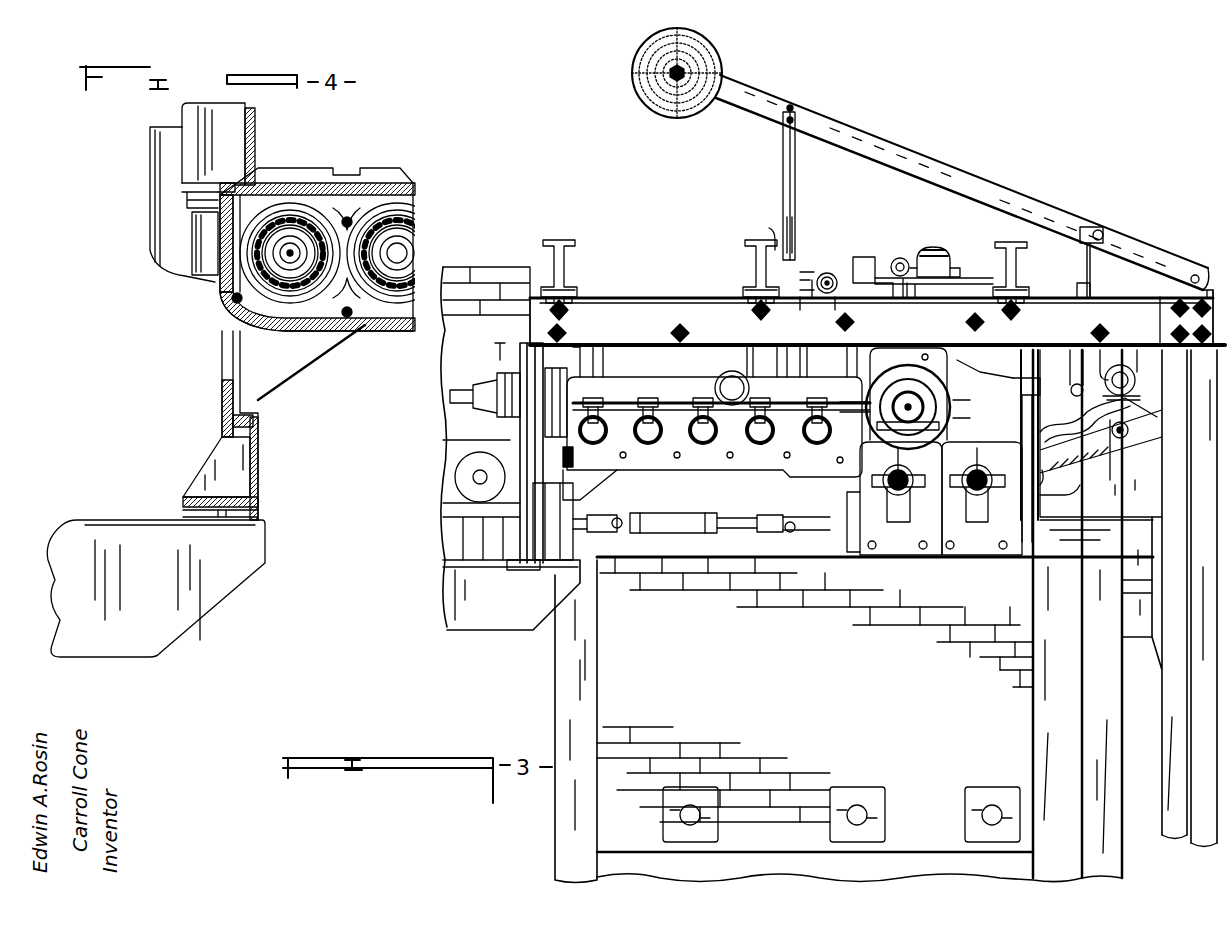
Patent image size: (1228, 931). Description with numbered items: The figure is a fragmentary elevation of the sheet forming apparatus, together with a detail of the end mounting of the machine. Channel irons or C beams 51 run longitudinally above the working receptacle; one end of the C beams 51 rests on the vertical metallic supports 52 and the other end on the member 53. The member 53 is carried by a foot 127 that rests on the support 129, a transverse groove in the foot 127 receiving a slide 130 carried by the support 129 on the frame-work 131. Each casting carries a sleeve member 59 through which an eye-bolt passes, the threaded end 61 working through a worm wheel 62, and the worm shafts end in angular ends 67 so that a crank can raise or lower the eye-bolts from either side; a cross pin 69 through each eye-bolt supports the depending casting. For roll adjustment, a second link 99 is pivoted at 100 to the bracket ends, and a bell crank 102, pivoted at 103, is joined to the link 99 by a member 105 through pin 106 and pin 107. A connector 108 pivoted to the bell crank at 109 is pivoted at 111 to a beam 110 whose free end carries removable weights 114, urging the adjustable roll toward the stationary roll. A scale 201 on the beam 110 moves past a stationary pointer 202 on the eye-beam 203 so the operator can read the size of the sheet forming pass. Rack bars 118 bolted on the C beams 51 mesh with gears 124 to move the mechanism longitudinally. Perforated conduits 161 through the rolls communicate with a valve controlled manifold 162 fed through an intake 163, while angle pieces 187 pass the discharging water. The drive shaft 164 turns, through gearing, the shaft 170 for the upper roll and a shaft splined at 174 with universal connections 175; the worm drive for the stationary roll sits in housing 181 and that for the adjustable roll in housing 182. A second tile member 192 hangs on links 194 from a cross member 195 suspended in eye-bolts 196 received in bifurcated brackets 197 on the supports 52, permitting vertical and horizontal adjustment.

In FIG. 3, the C beams 51 is at (672, 312).
In FIG. 3, the vertical metallic supports 52 is at (1210, 683).
In FIG. 4, the member 53 is at (218, 132).
In FIG. 3, the member 53 is at (573, 343).
In FIG. 3, the sleeve member 59 is at (947, 276).
In FIG. 3, the threaded end 61 is at (931, 248).
In FIG. 3, the worm wheel 62 is at (930, 273).
In FIG. 3, the angular ends 67 is at (902, 257).
In FIG. 3, the cross pin 69 is at (923, 357).
In FIG. 3, the second link 99 is at (1040, 487).
In FIG. 3, the pivot 100 is at (1030, 527).
In FIG. 3, the bell crank 102 is at (1047, 363).
In FIG. 3, the pivot 103 is at (1010, 357).
In FIG. 3, the member 105 is at (970, 400).
In FIG. 3, the pin 106 is at (990, 372).
In FIG. 3, the pin 107 is at (970, 418).
In FIG. 3, the connector 108 is at (1073, 283).
In FIG. 3, the pivot 109 is at (1036, 400).
In FIG. 3, the beam 110 is at (880, 145).
In FIG. 3, the pivot 111 is at (1097, 240).
In FIG. 3, the removable weights 114 is at (660, 78).
In FIG. 3, the rack bars 118 is at (818, 312).
In FIG. 3, the gears 124 is at (823, 267).
In FIG. 4, the foot 127 is at (253, 355).
In FIG. 4, the support 129 is at (240, 472).
In FIG. 4, the slide 130 is at (257, 422).
In FIG. 4, the frame-work 131 is at (200, 597).
In FIG. 3, the frame-work 131 is at (480, 613).
In FIG. 4, the perforated conduits 161 is at (215, 278).
In FIG. 3, the manifold 162 is at (645, 362).
In FIG. 3, the intake 163 is at (717, 377).
In FIG. 3, the drive shaft 164 is at (503, 356).
In FIG. 3, the shaft 170 is at (463, 420).
In FIG. 3, the splined portion 174 is at (687, 530).
In FIG. 3, the universal connections 175 is at (617, 517).
In FIG. 3, the housing 181 is at (913, 545).
In FIG. 3, the housing 182 is at (980, 547).
In FIG. 3, the angle pieces 187 is at (915, 510).
In FIG. 3, the second tile member 192 is at (1093, 455).
In FIG. 3, the links 194 is at (1110, 445).
In FIG. 3, the cross member 195 is at (1123, 400).
In FIG. 3, the eye-bolts 196 is at (1153, 297).
In FIG. 3, the bifurcated brackets 197 is at (1163, 297).
In FIG. 3, the scale 201 is at (783, 148).
In FIG. 3, the pointer 202 is at (769, 228).
In FIG. 3, the eye-beam 203 is at (752, 257).